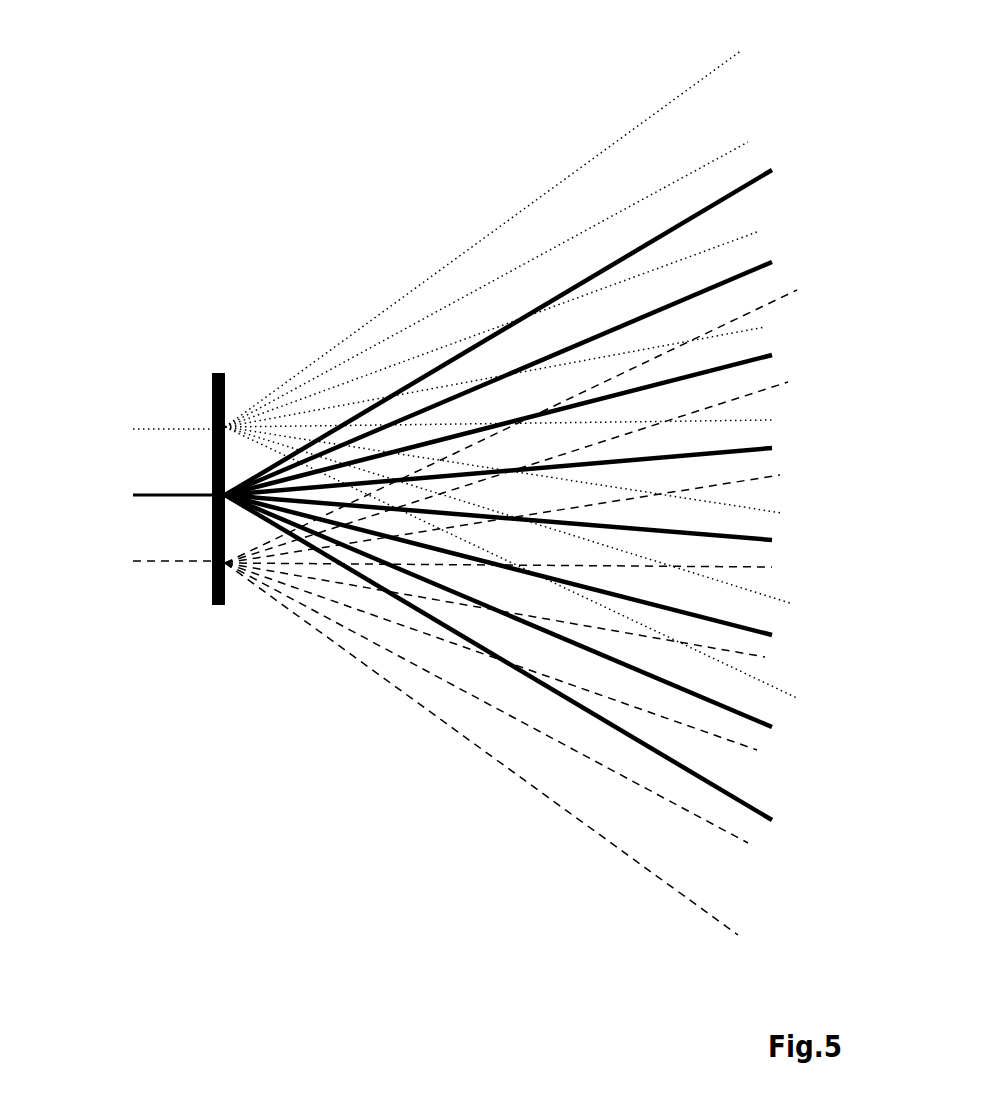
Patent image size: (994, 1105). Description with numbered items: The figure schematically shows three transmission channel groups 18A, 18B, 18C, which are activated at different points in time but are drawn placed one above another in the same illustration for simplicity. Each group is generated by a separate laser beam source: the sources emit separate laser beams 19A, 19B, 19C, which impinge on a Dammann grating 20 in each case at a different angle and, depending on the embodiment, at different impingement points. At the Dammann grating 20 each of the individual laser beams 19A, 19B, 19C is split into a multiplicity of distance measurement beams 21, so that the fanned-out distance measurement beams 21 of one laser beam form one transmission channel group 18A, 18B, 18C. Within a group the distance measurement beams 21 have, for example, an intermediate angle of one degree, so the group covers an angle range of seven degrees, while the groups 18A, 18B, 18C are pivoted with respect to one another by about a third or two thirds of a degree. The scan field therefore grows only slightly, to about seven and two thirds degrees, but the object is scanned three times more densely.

The transmission channel group 18A is at (511, 374).
The transmission channel group 18B is at (498, 442).
The transmission channel group 18C is at (511, 470).
The laser beam 19A is at (121, 393).
The laser beam 19B is at (121, 454).
The laser beam 19C is at (121, 520).
The Dammann grating 20 is at (151, 436).
The distance measurement beams 21 is at (511, 470).